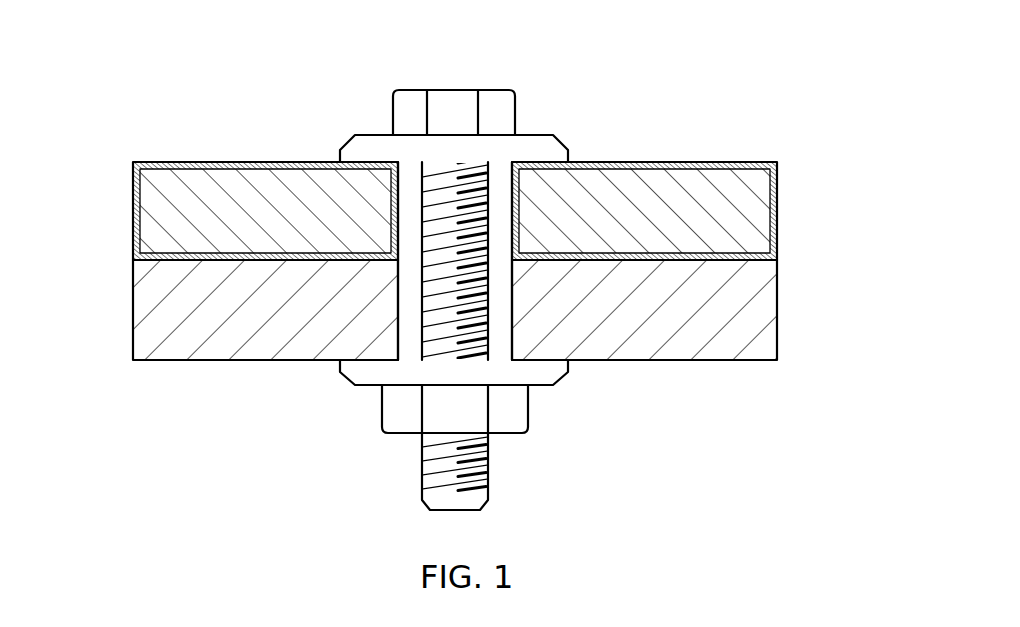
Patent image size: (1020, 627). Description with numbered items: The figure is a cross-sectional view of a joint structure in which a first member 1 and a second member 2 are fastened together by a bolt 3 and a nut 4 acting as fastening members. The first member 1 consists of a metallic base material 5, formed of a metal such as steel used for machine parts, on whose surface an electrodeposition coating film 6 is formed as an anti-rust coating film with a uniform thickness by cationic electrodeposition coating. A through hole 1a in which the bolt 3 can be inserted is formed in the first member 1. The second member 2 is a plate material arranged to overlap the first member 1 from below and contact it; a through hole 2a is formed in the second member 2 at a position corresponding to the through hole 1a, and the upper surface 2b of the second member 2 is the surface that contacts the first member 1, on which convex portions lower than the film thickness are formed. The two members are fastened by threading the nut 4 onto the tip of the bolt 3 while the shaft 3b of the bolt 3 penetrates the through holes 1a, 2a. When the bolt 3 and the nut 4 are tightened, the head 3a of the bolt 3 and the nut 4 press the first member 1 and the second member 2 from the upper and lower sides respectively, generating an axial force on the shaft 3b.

The first member 1 is at (463, 156).
The through hole 1a is at (403, 190).
The second member 2 is at (494, 269).
The through hole 2a is at (405, 325).
The upper surface 2b is at (257, 252).
The bolt 3 is at (502, 255).
The head 3a is at (458, 98).
The shaft 3b is at (448, 290).
The nut 4 is at (403, 428).
The base material 5 is at (182, 205).
The electrodeposition coating film 6 is at (131, 233).